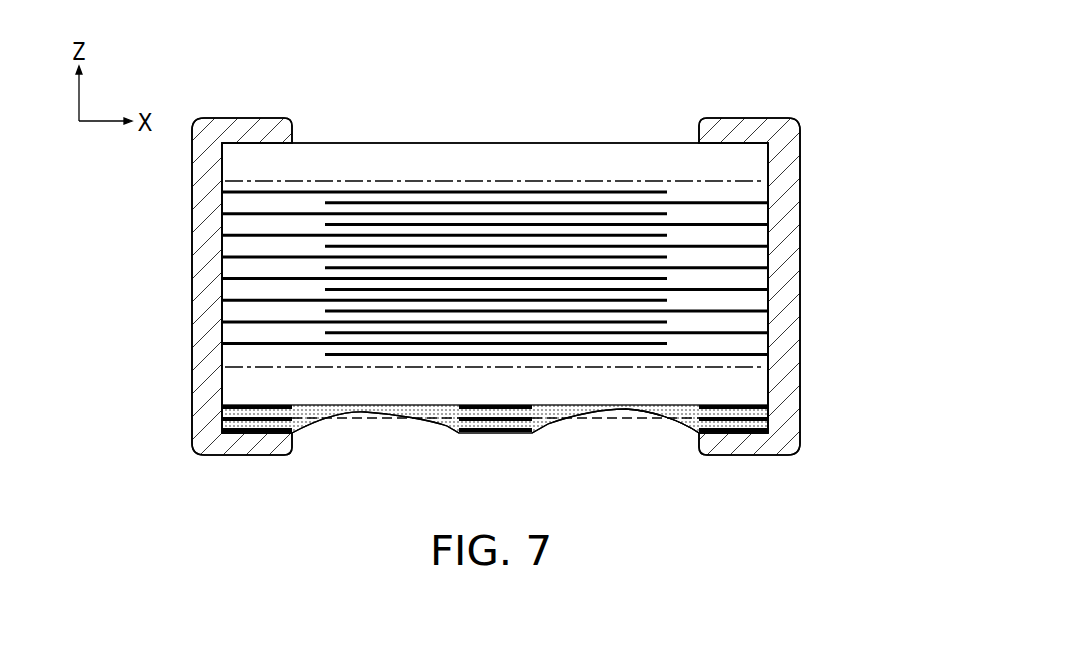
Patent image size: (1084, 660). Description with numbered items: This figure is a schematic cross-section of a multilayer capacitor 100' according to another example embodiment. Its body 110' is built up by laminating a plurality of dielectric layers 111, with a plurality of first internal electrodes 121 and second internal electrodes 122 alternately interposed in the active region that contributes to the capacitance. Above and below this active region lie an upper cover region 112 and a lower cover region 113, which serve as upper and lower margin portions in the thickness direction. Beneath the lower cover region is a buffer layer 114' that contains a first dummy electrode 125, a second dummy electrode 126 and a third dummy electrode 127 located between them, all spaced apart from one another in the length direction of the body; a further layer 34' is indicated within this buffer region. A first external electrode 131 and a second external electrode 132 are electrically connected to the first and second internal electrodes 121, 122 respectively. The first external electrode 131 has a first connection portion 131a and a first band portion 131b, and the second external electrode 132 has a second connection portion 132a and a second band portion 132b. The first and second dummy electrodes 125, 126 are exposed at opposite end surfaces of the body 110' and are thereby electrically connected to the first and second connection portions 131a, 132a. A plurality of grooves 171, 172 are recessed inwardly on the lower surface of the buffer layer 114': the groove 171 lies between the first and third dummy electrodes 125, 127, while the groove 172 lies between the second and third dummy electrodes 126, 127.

The multilayer electronic component 100' is at (496, 235).
The body 110' is at (495, 240).
The dielectric layer 111 is at (530, 205).
The upper cover region 112 is at (460, 165).
The lower cover region 113 is at (412, 383).
The buffer layer 114' is at (662, 458).
The first internal electrode 121 is at (385, 192).
The second internal electrode 122 is at (598, 203).
The first dummy electrode 125 is at (253, 418).
The second dummy electrode 126 is at (733, 418).
The third dummy electrode 127 is at (492, 432).
The first external electrode 131 is at (112, 370).
The first connection portion 131a is at (197, 357).
The first band portion 131b is at (243, 457).
The second external electrode 132 is at (884, 370).
The second connection portion 132a is at (797, 357).
The second band portion 132b is at (755, 457).
The groove 171 is at (315, 422).
The groove 172 is at (560, 421).
The insulating layer 34' is at (495, 448).